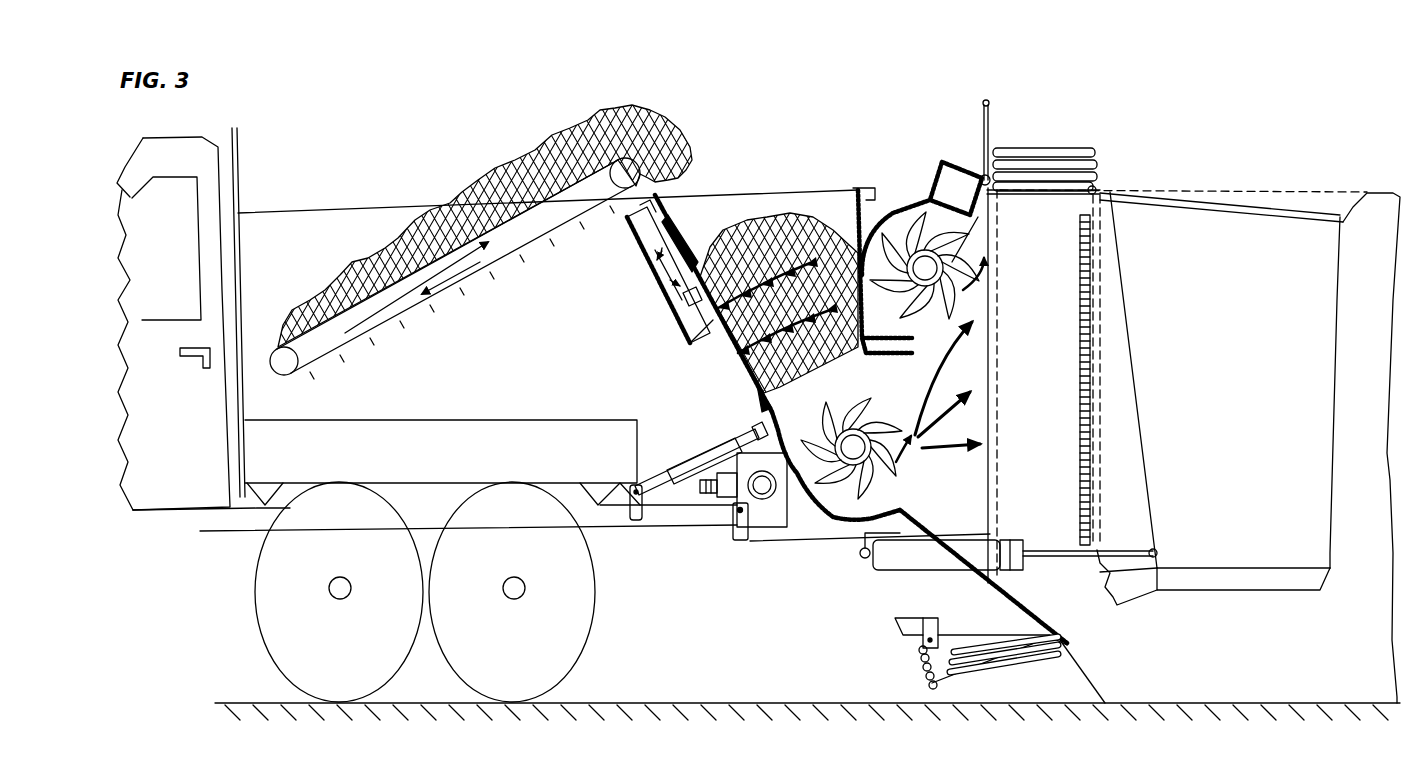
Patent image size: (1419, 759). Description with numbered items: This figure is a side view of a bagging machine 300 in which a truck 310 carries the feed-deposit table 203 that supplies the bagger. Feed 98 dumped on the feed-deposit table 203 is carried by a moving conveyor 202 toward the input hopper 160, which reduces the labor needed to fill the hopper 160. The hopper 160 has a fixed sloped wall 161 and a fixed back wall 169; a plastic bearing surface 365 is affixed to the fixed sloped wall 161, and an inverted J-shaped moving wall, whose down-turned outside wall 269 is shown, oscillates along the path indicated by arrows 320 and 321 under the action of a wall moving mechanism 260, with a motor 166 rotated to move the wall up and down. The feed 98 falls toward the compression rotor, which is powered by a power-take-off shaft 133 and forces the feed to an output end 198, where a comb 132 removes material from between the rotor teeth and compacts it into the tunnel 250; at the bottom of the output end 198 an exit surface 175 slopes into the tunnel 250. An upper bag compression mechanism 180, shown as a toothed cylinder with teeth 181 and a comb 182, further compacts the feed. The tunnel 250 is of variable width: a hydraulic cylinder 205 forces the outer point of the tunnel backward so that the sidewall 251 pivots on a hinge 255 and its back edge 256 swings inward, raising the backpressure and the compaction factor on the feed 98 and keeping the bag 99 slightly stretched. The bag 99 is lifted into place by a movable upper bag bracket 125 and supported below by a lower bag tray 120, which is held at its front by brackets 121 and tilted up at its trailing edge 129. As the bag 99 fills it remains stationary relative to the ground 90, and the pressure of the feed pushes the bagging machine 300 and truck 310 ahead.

The ground 90 is at (702, 703).
The feed 98 is at (328, 290).
The bag 99 is at (1070, 148).
The lower bag tray 120 is at (940, 692).
The brackets 121 is at (939, 630).
The movable upper bag bracket 125 is at (982, 118).
The trailing edge 129 is at (1064, 650).
The comb 132 is at (883, 410).
The power-take-off shaft 133 is at (700, 477).
The hopper 160 is at (856, 188).
The fixed sloped wall 161 is at (745, 382).
The motor 166 is at (700, 328).
The fixed back wall 169 is at (866, 186).
The exit surface 175 is at (1010, 602).
The upper bag compression mechanism 180 is at (938, 302).
The teeth 181 is at (935, 210).
The comb 182 is at (966, 236).
The output end 198 is at (852, 510).
The moving conveyor 202 is at (395, 320).
The feed-deposit table 203 is at (322, 213).
The hydraulic cylinder 205 is at (950, 540).
The tunnel 250 is at (1337, 406).
The sidewall 251 is at (1262, 570).
The hinge 255 is at (1080, 320).
The back edge 256 is at (1333, 570).
The wall moving mechanism 260 is at (650, 299).
The outside wall 269 is at (640, 235).
The bagging machine 300 is at (1198, 100).
The truck 310 is at (172, 127).
The arrow 320 is at (660, 270).
The arrow 321 is at (668, 300).
The plastic bearing surface 365 is at (760, 390).